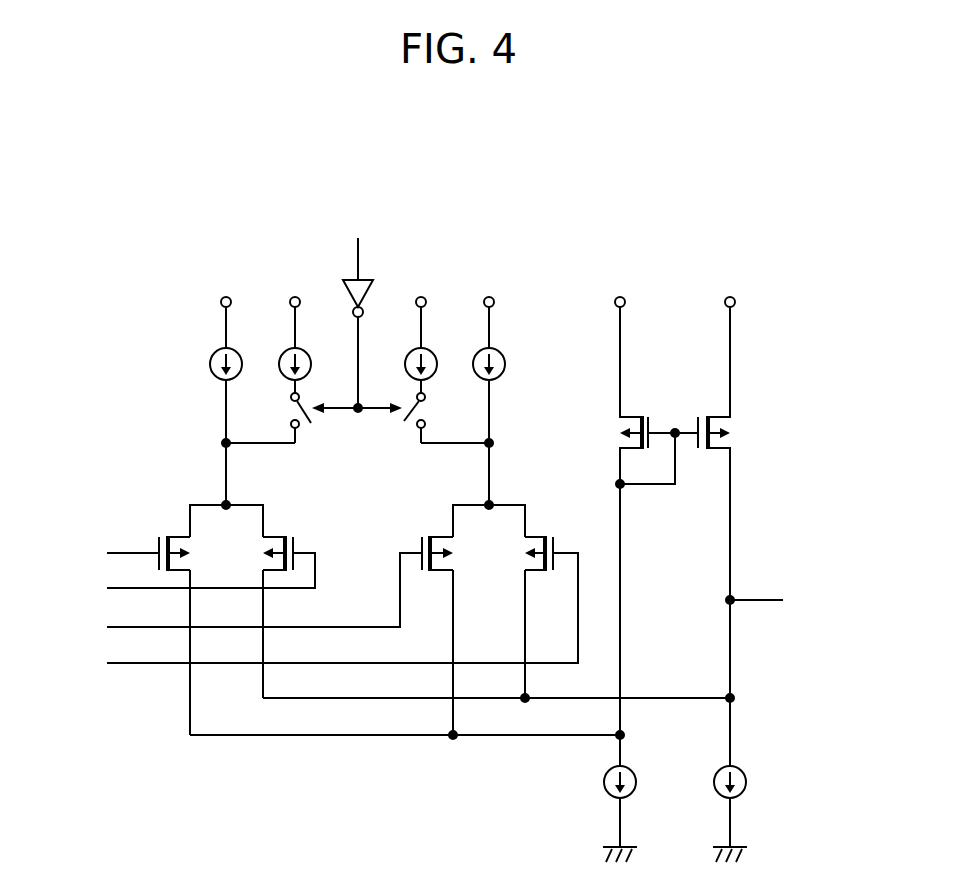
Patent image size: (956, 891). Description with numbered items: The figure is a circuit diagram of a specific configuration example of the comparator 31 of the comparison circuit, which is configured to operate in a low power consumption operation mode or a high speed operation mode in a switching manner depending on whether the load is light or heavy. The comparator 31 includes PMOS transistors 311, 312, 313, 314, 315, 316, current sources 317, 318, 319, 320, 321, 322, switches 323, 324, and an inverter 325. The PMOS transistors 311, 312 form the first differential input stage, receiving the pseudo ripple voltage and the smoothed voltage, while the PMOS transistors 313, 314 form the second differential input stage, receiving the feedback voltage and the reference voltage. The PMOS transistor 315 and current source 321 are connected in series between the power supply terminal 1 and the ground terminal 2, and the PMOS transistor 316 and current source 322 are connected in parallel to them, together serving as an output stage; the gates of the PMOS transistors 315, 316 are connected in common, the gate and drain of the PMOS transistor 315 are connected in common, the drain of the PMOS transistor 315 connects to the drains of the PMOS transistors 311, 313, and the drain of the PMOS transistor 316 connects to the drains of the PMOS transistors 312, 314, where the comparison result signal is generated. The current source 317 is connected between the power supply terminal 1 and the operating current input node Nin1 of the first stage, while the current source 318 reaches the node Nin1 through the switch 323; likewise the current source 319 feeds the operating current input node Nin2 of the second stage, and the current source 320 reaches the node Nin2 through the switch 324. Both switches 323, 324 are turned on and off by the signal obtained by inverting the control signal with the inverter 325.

The power supply terminal 1 is at (736, 302).
The ground terminal 2 is at (741, 846).
The comparator 31 is at (783, 176).
The PMOS transistor 311 is at (167, 536).
The PMOS transistor 312 is at (286, 536).
The PMOS transistor 313 is at (431, 536).
The PMOS transistor 314 is at (547, 536).
The PMOS transistor 315 is at (634, 416).
The PMOS transistor 316 is at (718, 450).
The current source 317 is at (217, 352).
The current source 318 is at (286, 352).
The current source 319 is at (498, 351).
The current source 320 is at (430, 351).
The current source 321 is at (636, 773).
The current source 322 is at (746, 773).
The switch 323 is at (290, 413).
The switch 324 is at (425, 412).
The inverter 325 is at (349, 295).
The operating current input node Nin1 is at (224, 503).
The operating current input node Nin2 is at (492, 503).